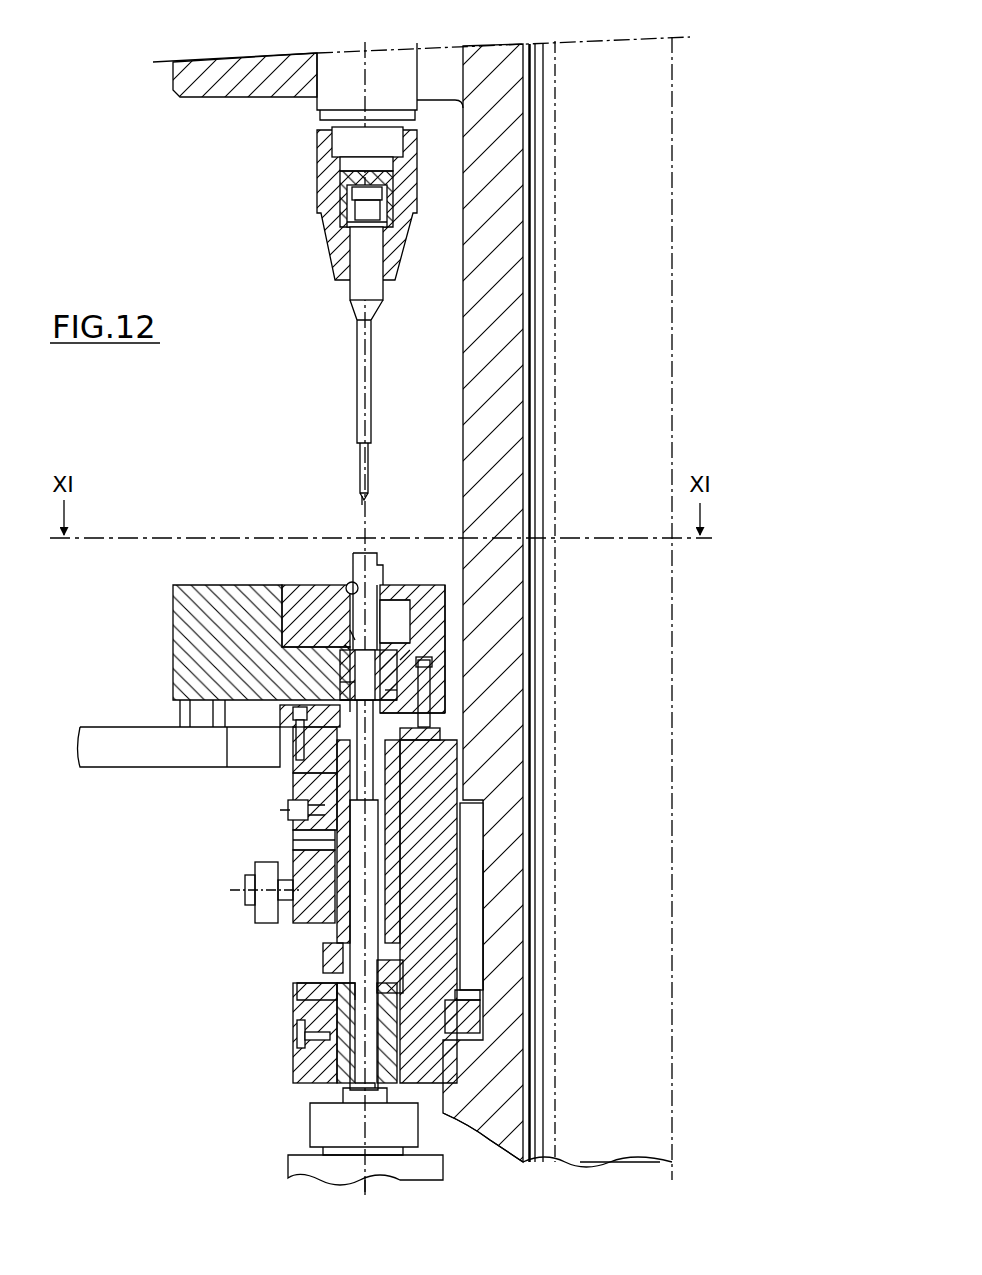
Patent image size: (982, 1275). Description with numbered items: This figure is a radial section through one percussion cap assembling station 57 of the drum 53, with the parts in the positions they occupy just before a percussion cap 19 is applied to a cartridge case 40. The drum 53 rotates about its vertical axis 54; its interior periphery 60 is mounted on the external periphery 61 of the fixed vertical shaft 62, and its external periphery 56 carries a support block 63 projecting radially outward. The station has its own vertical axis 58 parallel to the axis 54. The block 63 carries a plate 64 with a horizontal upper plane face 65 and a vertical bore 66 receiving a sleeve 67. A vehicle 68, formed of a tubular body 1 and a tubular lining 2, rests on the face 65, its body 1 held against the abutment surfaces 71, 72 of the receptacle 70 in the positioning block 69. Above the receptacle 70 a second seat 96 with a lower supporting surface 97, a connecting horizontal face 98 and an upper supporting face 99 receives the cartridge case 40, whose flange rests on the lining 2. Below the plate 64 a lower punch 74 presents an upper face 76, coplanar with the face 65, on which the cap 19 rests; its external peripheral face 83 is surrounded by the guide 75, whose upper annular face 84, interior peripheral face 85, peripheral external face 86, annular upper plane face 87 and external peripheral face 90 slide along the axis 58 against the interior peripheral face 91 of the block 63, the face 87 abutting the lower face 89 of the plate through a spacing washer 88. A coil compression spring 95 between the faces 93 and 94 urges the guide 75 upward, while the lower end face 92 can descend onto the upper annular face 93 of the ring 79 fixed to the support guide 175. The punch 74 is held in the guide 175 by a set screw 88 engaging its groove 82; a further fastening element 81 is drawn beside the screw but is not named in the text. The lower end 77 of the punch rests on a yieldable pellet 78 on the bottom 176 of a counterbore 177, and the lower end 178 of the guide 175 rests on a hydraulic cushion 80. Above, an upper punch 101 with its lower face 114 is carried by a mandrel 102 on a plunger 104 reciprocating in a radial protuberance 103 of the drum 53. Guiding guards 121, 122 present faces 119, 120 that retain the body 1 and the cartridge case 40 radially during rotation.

The body 1 is at (345, 646).
The lining 2 is at (350, 632).
The percussion cap 19 is at (350, 702).
The cartridge case 40 is at (340, 568).
The drum 53 is at (478, 1150).
The vertical axis 54 is at (672, 790).
The external periphery 56 is at (463, 420).
The percussion cap assembling station 57 is at (237, 492).
The vertical axis of the assembly station 58 is at (372, 1185).
The interior periphery 60 is at (533, 570).
The external periphery of the shaft 61 is at (533, 355).
The vertical shaft 62 is at (592, 1130).
The support block 63 is at (230, 885).
The plate 64 is at (278, 717).
The upper plane face 65 is at (275, 702).
The vertical bore 66 is at (380, 735).
The sleeve 67 is at (300, 775).
The vehicle 68 is at (338, 660).
The positioning block 69 is at (412, 578).
The receptacle 70 is at (400, 672).
The abutment surface 71 is at (385, 690).
The abutment surface 72 is at (415, 650).
The lower punch 74 is at (385, 870).
The guide 75 is at (415, 850).
The upper face 76 is at (380, 715).
The lower end 77 is at (382, 1000).
The yieldable pellet 78 is at (330, 1060).
The ring 79 is at (405, 975).
The hydraulic cushion 80 is at (300, 1172).
The screw 81 is at (318, 1018).
The groove 82 is at (335, 1010).
The external peripheral face 83 is at (300, 828).
The upper annular face 84 is at (345, 700).
The interior peripheral face 85 is at (382, 760).
The peripheral external face 86 is at (288, 762).
The annular upper plane face 87 is at (300, 800).
The set screw 88 is at (473, 896).
The lower face of the plate 89 is at (390, 775).
The external peripheral face 90 is at (245, 866).
The interior peripheral face 91 is at (335, 826).
The lower end face 92 is at (320, 912).
The upper annular face 93 is at (320, 978).
The annular plane face 94 is at (440, 835).
The coil compression spring 95 is at (410, 920).
The second seat 96 is at (425, 585).
The lower supporting surface 97 is at (394, 610).
The horizontal face 98 is at (395, 650).
The upper supporting face 99 is at (357, 565).
The upper punch 101 is at (353, 390).
The mandrel 102 is at (305, 222).
The radial protuberance 103 is at (275, 85).
The plunger 104 is at (395, 70).
The lower face 114 is at (362, 498).
The face 119 is at (340, 682).
The face 120 is at (347, 585).
The guiding guard 121 is at (190, 608).
The guiding guard 122 is at (292, 608).
The support guide 175 is at (330, 990).
The bottom of the counterbore 176 is at (390, 1045).
The counterbore 177 is at (462, 1010).
The lower end of the guide 178 is at (380, 1090).